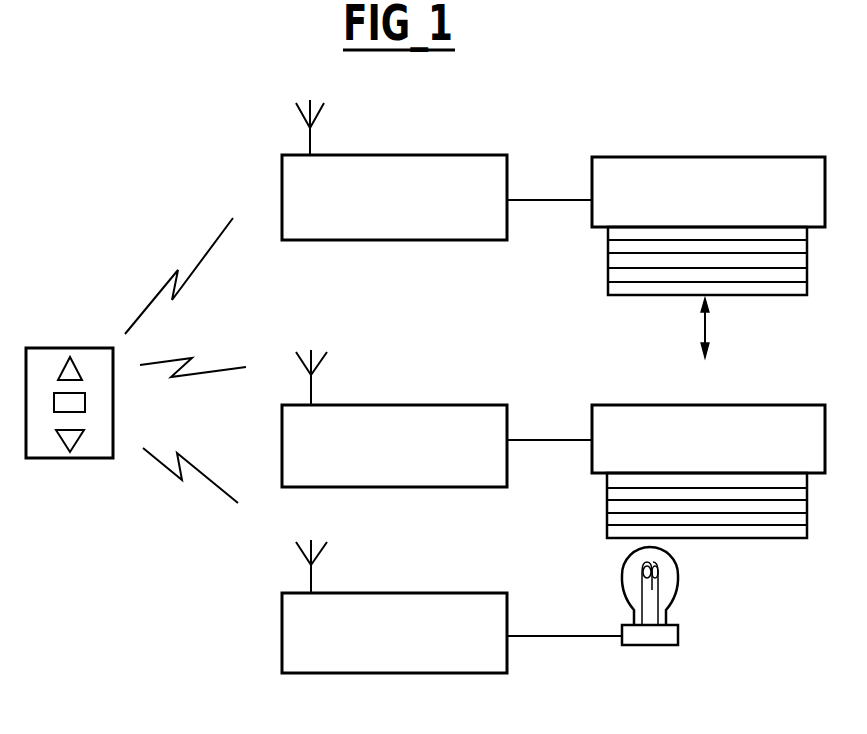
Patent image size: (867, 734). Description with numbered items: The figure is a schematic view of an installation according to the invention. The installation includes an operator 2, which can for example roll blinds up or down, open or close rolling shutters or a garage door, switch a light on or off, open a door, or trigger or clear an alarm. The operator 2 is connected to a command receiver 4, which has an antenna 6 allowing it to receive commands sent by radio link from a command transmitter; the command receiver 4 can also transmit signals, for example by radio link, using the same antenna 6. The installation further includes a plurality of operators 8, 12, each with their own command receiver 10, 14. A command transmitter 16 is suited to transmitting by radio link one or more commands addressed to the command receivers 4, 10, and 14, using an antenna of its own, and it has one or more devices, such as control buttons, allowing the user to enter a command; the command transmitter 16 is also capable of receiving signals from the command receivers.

The operator 2 is at (783, 155).
The command receiver 4 is at (488, 155).
The antenna 6 is at (308, 102).
The operator 8 is at (781, 404).
The command receiver 10 is at (467, 404).
The operator 12 is at (660, 646).
The command receiver 14 is at (453, 593).
The command transmitter 16 is at (53, 347).